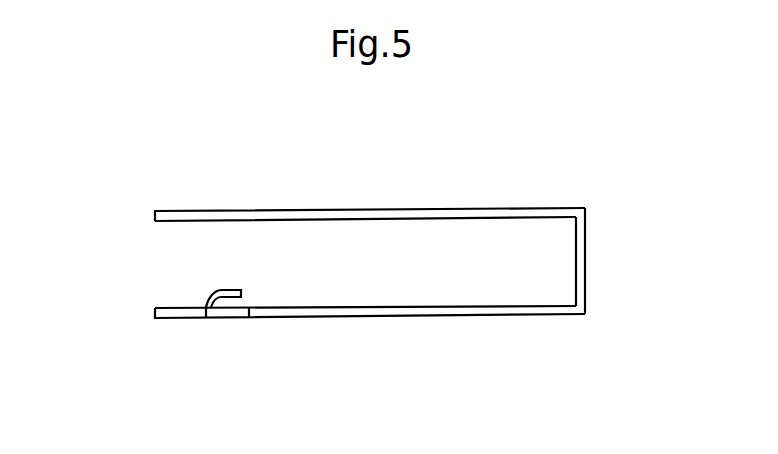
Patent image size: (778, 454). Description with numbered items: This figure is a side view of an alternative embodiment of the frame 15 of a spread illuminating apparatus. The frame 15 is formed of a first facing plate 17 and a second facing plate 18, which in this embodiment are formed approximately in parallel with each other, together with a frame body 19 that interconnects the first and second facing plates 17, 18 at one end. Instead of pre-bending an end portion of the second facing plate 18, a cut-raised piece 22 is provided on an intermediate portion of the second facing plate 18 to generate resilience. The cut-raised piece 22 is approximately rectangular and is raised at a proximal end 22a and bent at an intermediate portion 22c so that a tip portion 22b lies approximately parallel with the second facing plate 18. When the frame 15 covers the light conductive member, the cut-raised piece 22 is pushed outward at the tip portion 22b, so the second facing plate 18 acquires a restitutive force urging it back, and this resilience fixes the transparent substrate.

The frame 15 is at (420, 262).
The first facing plate 17 is at (365, 209).
The second facing plate 18 is at (367, 317).
The frame body 19 is at (580, 258).
The cut-raised piece 22 is at (214, 313).
The proximal end 22a is at (203, 307).
The tip portion 22b is at (227, 290).
The intermediate portion 22c is at (222, 298).